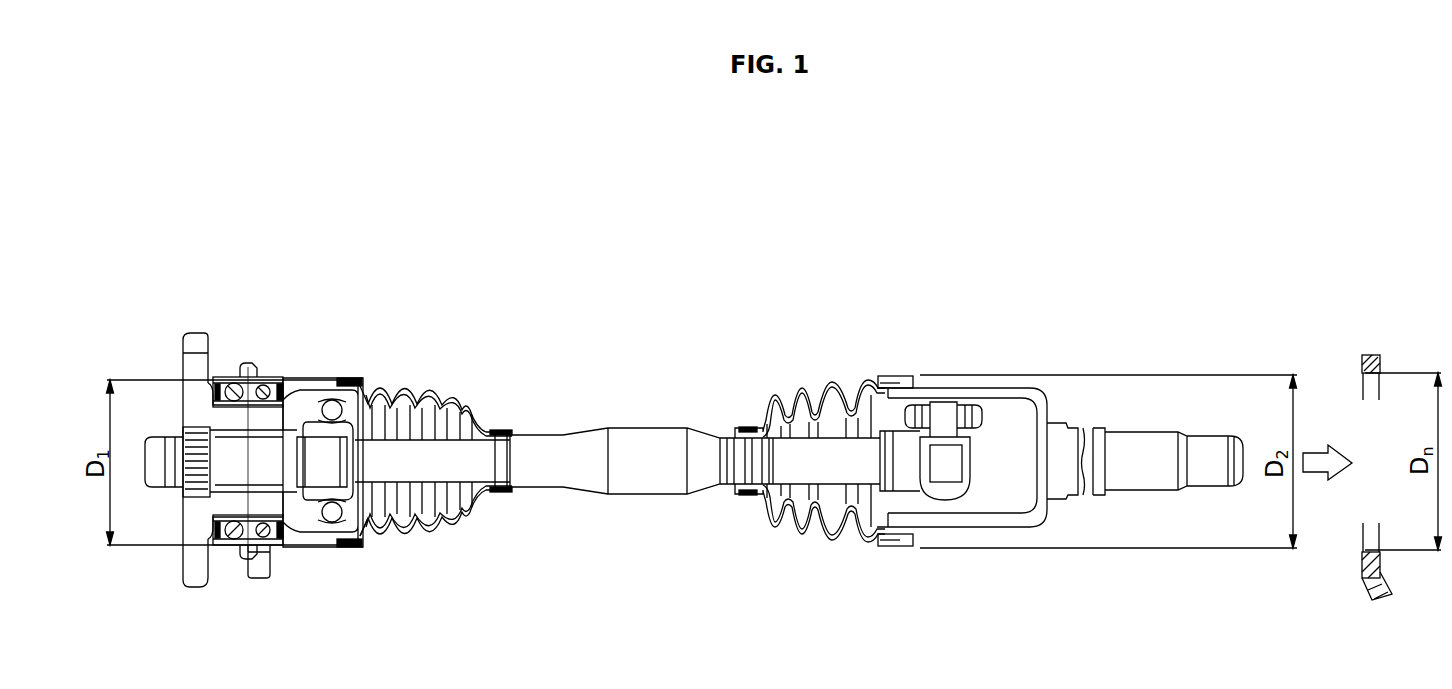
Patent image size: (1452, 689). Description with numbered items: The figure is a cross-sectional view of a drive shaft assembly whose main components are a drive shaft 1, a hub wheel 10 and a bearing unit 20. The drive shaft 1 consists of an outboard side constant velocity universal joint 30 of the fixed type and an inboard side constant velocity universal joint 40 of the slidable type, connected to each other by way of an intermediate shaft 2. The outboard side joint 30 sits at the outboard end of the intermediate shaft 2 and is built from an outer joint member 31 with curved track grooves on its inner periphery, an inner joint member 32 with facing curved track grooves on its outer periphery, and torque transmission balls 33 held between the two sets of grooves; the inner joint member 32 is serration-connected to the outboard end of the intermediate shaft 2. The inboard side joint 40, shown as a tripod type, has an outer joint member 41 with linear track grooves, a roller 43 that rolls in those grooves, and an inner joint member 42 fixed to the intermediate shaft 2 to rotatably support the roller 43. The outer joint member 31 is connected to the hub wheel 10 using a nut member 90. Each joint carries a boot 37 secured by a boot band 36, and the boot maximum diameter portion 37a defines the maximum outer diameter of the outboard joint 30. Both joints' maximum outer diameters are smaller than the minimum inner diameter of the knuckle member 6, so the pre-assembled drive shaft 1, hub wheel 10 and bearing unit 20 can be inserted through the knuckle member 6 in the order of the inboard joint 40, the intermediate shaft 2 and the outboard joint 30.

The drive shaft 1 is at (718, 353).
The intermediate shaft 2 is at (645, 482).
The knuckle member 6 is at (1365, 597).
The hub wheel 10 is at (163, 363).
The bearing unit 20 is at (240, 358).
The outboard side constant velocity universal joint 30 is at (450, 373).
The outer joint member 31 is at (320, 526).
The inner joint member 32 is at (333, 508).
The torque transmission balls 33 is at (332, 403).
The boot band 36 is at (350, 378).
The boot 37 is at (413, 543).
The boot maximum diameter portion 37a is at (360, 547).
The inboard side constant velocity universal joint 40 is at (1045, 340).
The outer joint member 41 is at (998, 388).
The inner joint member 42 is at (947, 497).
The roller 43 is at (973, 403).
The nut member 90 is at (182, 497).